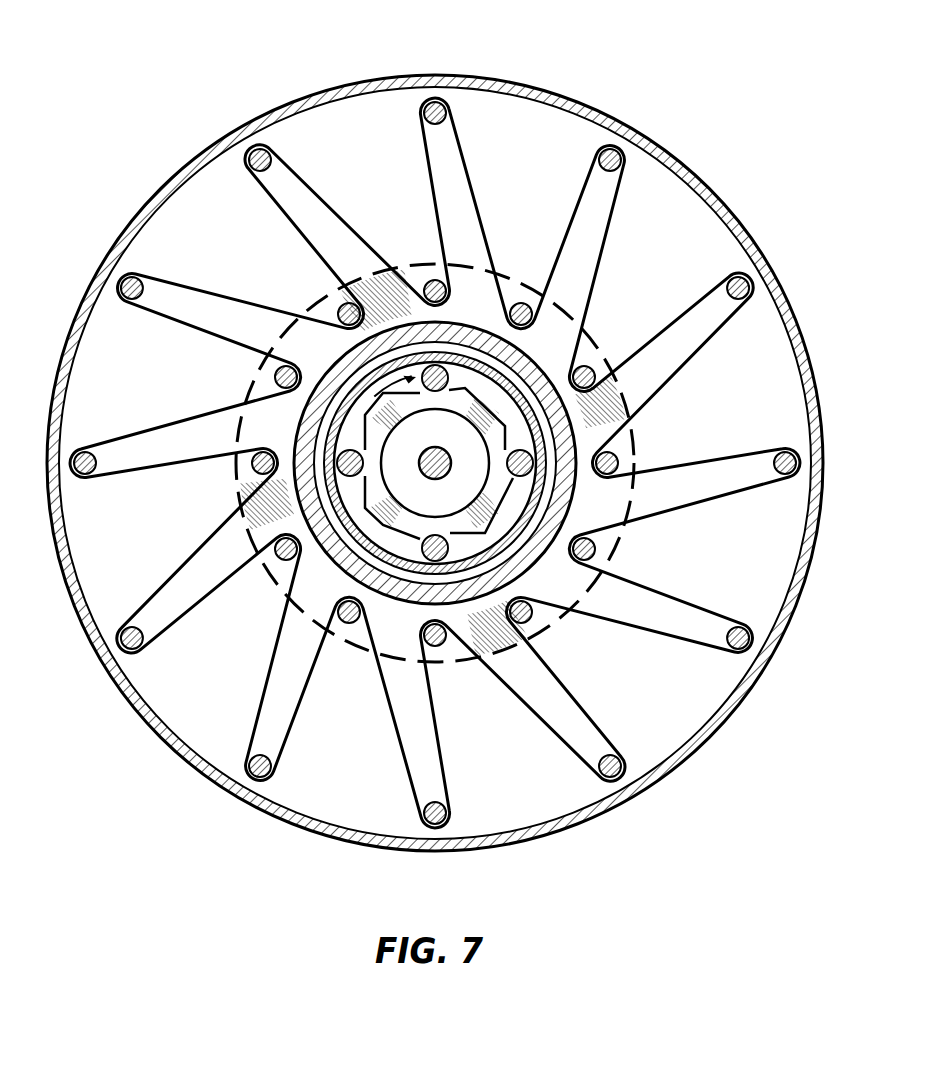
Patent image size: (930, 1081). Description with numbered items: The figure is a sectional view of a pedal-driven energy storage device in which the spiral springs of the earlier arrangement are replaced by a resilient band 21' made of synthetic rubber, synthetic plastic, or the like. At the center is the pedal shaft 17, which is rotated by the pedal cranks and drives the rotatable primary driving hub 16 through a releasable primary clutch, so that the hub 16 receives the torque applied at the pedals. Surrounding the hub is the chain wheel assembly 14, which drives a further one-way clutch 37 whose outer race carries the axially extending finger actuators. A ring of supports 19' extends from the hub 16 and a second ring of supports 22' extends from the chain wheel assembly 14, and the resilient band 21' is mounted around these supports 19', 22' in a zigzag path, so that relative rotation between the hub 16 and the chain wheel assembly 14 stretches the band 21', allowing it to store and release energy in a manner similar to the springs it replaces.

The chain wheel assembly 14 is at (195, 115).
The resilient band 21' is at (435, 422).
The supports 22' is at (409, 435).
The supports 19' is at (409, 467).
The pedal shaft 17 is at (421, 452).
The primary driving hub 16 is at (313, 412).
The further one-way clutch 37 is at (427, 553).